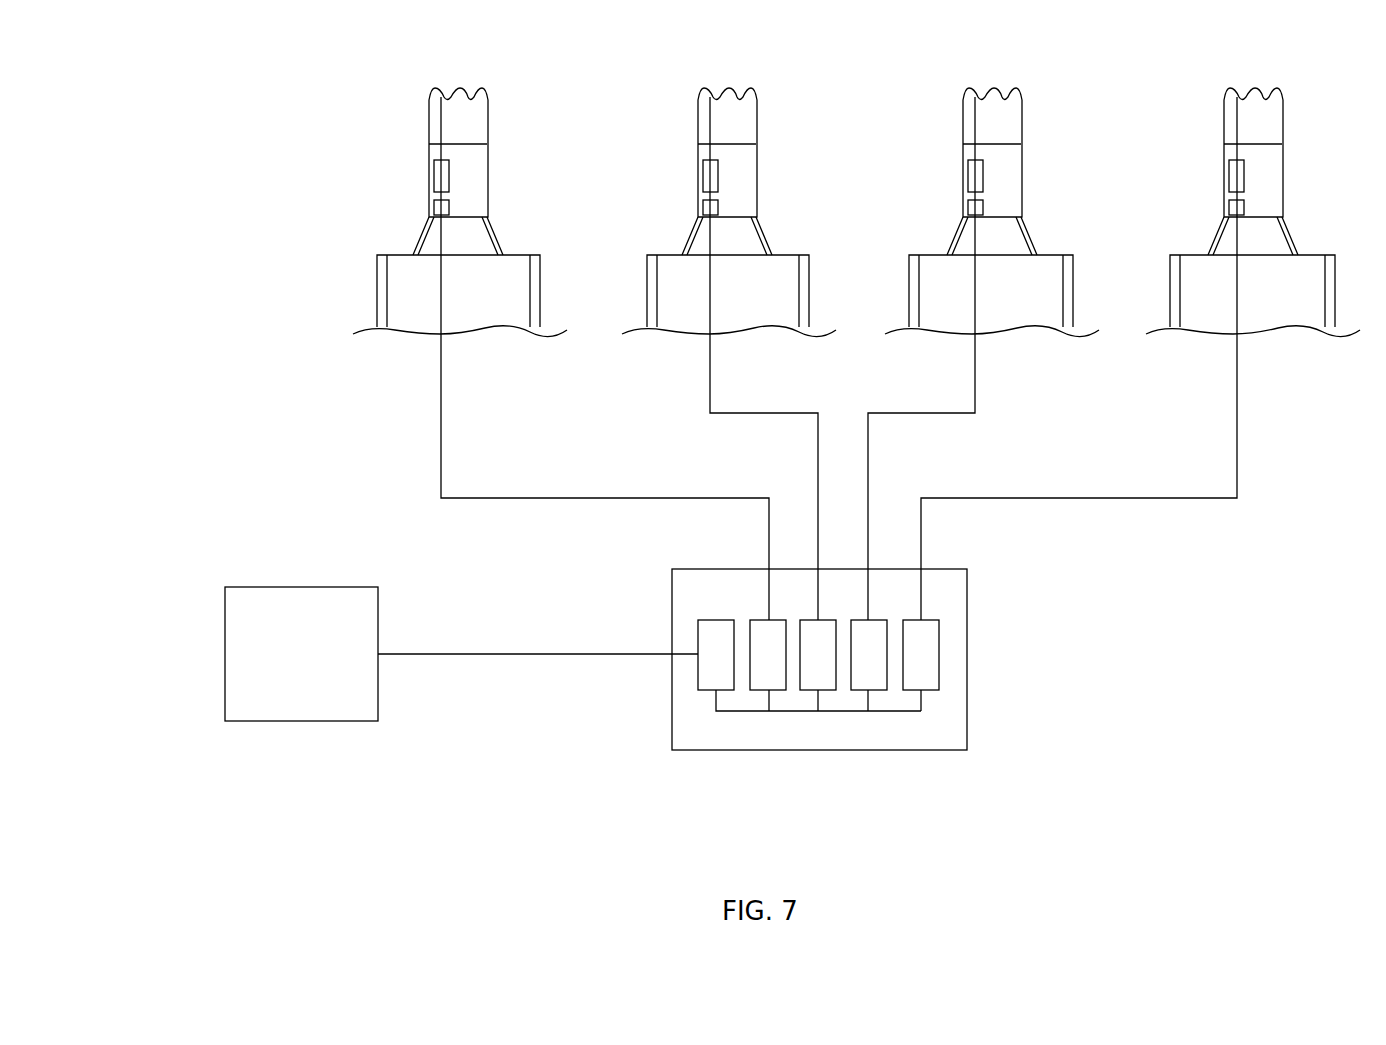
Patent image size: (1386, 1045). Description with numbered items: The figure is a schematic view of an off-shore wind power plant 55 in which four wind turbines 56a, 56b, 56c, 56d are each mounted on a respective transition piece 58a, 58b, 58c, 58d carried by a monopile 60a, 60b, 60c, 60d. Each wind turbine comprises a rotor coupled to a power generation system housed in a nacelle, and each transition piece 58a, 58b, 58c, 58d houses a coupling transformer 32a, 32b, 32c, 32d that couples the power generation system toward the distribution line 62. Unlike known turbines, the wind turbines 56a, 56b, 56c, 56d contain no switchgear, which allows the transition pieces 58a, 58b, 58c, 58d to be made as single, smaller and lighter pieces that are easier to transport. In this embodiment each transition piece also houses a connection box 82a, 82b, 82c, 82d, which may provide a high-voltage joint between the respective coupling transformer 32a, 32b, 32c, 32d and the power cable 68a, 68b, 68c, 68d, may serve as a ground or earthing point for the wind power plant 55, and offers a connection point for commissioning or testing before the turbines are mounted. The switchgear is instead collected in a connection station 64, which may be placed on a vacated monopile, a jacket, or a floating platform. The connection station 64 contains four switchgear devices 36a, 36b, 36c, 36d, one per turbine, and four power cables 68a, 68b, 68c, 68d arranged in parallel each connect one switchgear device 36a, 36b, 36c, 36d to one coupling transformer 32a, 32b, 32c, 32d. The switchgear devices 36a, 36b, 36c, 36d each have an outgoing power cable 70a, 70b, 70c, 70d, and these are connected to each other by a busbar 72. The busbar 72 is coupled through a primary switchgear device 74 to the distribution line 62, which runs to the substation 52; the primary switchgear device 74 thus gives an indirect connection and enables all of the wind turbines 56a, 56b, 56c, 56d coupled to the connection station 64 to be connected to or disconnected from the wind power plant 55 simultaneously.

The wind power plant 55 is at (218, 146).
The wind turbine 56a is at (408, 102).
The wind turbine 56b is at (676, 136).
The wind turbine 56c is at (943, 136).
The wind turbine 56d is at (1204, 136).
The coupling transformer 32a is at (434, 166).
The coupling transformer 32b is at (667, 167).
The coupling transformer 32c is at (931, 167).
The coupling transformer 32d is at (1193, 167).
The connection box 82a is at (434, 206).
The connection box 82b is at (667, 214).
The connection box 82c is at (931, 214).
The connection box 82d is at (1193, 215).
The transition piece 58a is at (508, 234).
The transition piece 58b is at (763, 210).
The transition piece 58c is at (1028, 210).
The transition piece 58d is at (1291, 211).
The monopile 60a is at (360, 290).
The monopile 60b is at (695, 295).
The monopile 60c is at (959, 294).
The monopile 60d is at (1220, 296).
The power cable 68a is at (441, 432).
The power cable 68b is at (710, 398).
The power cable 68c is at (975, 400).
The power cable 68d is at (1079, 358).
The connection station 64 is at (648, 586).
The primary switchgear device 74 is at (716, 655).
The switchgear device 36a is at (768, 655).
The switchgear device 36b is at (818, 655).
The switchgear device 36c is at (869, 655).
The switchgear device 36d is at (921, 655).
The outgoing power cable 70a is at (769, 700).
The outgoing power cable 70b is at (818, 700).
The outgoing power cable 70c is at (868, 700).
The outgoing power cable 70d is at (921, 697).
The busbar 72 is at (733, 711).
The substation 52 is at (301, 654).
The distribution line 62 is at (528, 655).